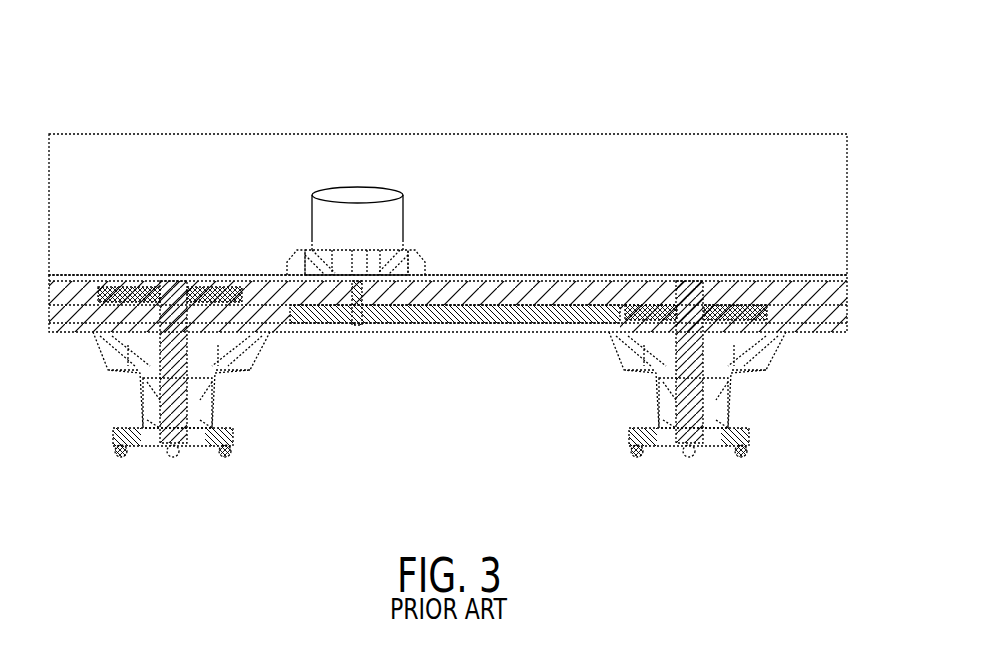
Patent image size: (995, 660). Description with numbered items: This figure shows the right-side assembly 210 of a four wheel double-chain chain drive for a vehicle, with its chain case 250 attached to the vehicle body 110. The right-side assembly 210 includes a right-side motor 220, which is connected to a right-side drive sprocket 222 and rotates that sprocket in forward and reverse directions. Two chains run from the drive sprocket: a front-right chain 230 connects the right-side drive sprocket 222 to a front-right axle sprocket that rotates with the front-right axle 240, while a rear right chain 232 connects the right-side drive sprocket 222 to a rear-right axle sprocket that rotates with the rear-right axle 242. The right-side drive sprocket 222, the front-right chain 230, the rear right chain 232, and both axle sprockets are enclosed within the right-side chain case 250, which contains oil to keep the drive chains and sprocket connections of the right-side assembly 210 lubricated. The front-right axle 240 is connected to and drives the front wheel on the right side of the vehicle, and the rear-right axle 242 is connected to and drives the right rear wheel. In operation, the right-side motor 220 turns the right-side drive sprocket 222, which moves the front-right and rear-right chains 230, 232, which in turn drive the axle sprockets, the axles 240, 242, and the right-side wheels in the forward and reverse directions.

The vehicle body 110 is at (718, 148).
The right-side assembly 210 is at (318, 458).
The right-side motor 220 is at (364, 192).
The right-side drive sprocket 222 is at (355, 328).
The front-right chain 230 is at (518, 323).
The rear right chain 232 is at (280, 305).
The front-right axle 240 is at (720, 489).
The rear-right axle 242 is at (158, 482).
The right-side chain case 250 is at (825, 335).